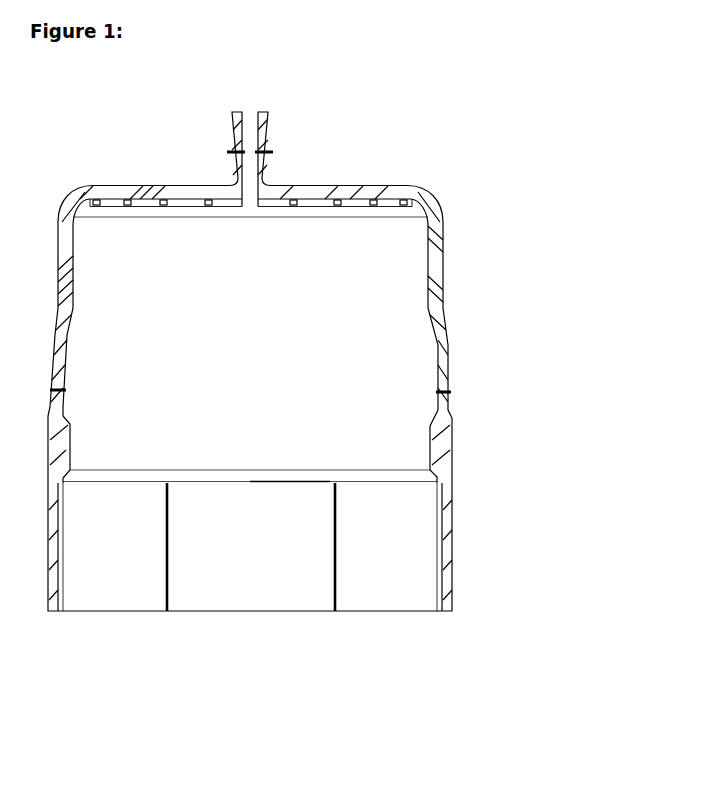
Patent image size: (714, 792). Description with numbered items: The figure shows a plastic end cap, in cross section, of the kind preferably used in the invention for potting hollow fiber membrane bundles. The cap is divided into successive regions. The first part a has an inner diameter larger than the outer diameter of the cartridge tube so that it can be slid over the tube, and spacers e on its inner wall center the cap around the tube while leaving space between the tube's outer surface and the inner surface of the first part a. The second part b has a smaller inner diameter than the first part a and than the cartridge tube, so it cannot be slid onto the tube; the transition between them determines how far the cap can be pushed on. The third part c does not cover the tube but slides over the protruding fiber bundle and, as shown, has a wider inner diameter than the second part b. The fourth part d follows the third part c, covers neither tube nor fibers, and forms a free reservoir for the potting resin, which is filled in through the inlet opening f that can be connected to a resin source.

The inlet opening for potting resin f is at (253, 107).
The spacer e is at (337, 620).
The first part of the end cap a is at (627, 610).
The second part of the end cap b is at (627, 482).
The third part of the end cap c is at (627, 430).
The fourth part of the end cap d is at (627, 218).